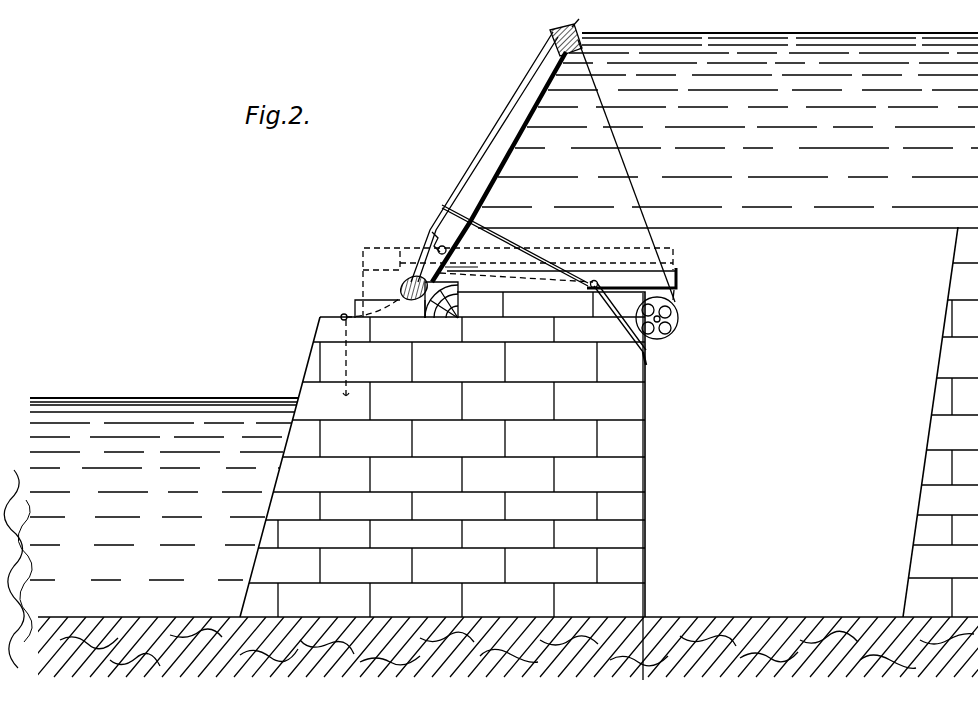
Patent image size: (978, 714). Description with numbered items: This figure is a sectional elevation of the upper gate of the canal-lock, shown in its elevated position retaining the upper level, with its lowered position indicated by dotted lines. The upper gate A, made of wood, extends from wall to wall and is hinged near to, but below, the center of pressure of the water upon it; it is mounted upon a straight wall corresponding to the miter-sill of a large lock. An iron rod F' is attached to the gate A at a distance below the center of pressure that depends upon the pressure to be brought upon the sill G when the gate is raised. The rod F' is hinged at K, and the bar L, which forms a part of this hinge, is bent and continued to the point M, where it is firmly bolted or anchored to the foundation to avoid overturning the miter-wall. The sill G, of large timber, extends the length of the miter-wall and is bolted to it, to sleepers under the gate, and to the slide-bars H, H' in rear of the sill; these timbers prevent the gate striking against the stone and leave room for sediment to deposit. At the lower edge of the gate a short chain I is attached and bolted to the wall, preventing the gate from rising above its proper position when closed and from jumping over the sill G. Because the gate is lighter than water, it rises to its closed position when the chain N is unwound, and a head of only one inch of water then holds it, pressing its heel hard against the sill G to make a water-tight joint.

The upper gate A is at (496, 150).
The iron rod F' is at (515, 245).
The hinge K is at (603, 277).
The chain N is at (626, 171).
The slide-bar H' is at (667, 318).
The bar L is at (626, 326).
The anchoring point M is at (656, 486).
The sill G is at (451, 300).
The slide-bar H is at (390, 309).
The short chain I is at (408, 287).